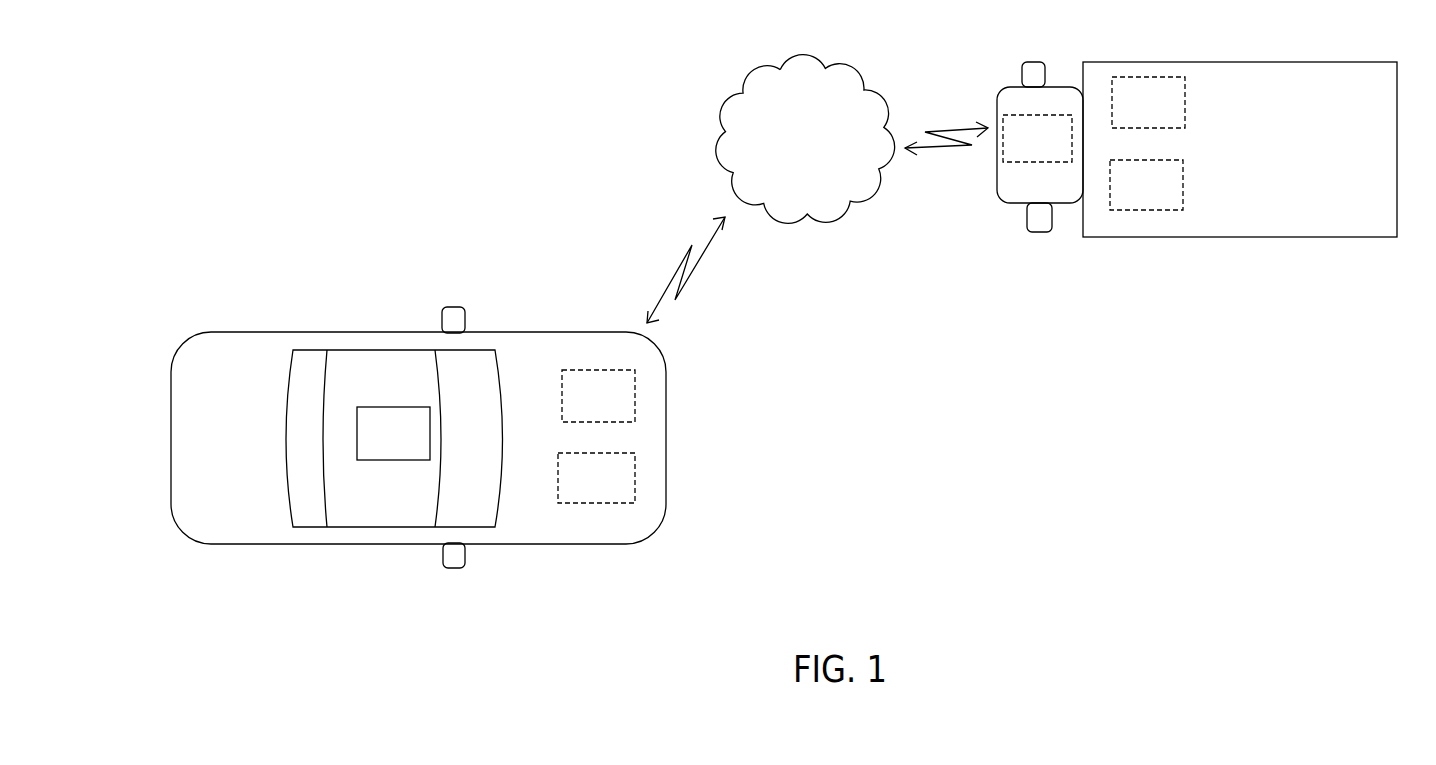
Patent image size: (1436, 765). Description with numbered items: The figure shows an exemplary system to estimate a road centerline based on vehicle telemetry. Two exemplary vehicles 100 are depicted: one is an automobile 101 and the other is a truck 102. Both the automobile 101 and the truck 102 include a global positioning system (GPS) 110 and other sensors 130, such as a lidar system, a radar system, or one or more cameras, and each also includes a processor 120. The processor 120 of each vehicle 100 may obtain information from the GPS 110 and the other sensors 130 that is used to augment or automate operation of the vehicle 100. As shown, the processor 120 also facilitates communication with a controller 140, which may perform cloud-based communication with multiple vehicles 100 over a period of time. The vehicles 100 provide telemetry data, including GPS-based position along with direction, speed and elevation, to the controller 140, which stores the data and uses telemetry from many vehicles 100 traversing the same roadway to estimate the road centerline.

The vehicle 100 is at (784, 345).
The automobile 101 is at (248, 546).
The truck 102 is at (1233, 238).
The global positioning system (GPS) 110 is at (622, 409).
The processor 120 is at (620, 492).
The other sensors 130 is at (417, 447).
The controller 140 is at (830, 155).